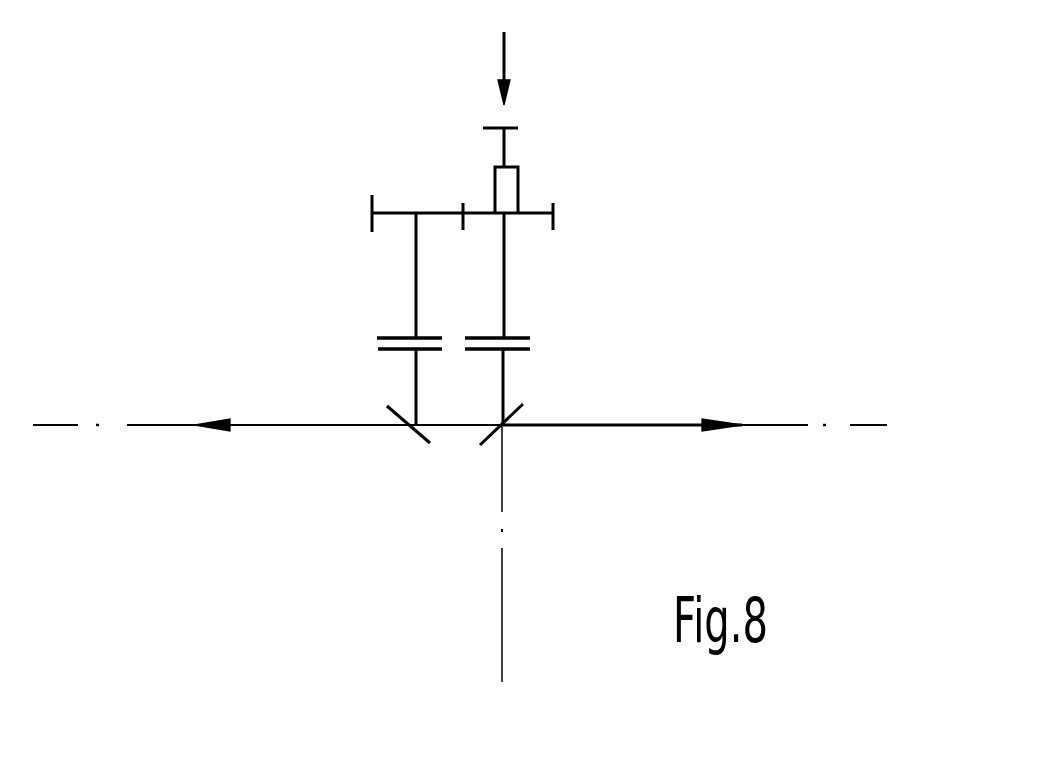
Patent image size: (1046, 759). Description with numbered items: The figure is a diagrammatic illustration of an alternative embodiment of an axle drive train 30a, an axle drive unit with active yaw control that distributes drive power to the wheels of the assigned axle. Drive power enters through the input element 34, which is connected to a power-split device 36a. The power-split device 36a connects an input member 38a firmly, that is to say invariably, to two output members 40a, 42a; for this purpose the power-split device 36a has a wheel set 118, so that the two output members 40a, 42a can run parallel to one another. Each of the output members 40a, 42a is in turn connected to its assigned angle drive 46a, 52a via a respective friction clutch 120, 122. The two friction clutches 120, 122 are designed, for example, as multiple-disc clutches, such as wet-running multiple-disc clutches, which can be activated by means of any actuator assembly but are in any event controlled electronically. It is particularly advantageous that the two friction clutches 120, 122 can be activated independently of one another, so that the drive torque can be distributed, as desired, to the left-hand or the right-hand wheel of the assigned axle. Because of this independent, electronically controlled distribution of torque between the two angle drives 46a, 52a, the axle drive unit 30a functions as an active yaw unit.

The axle drive train 30a is at (460, 342).
The input element 34 is at (503, 128).
The power-split device 36a is at (462, 160).
The input member 38a is at (507, 155).
The wheel set 118 is at (553, 213).
The output member 40a is at (508, 279).
The output member 42a is at (410, 287).
The friction clutch 120 is at (523, 352).
The friction clutch 122 is at (403, 350).
The angle drive 46a is at (511, 440).
The angle drive 52a is at (400, 447).